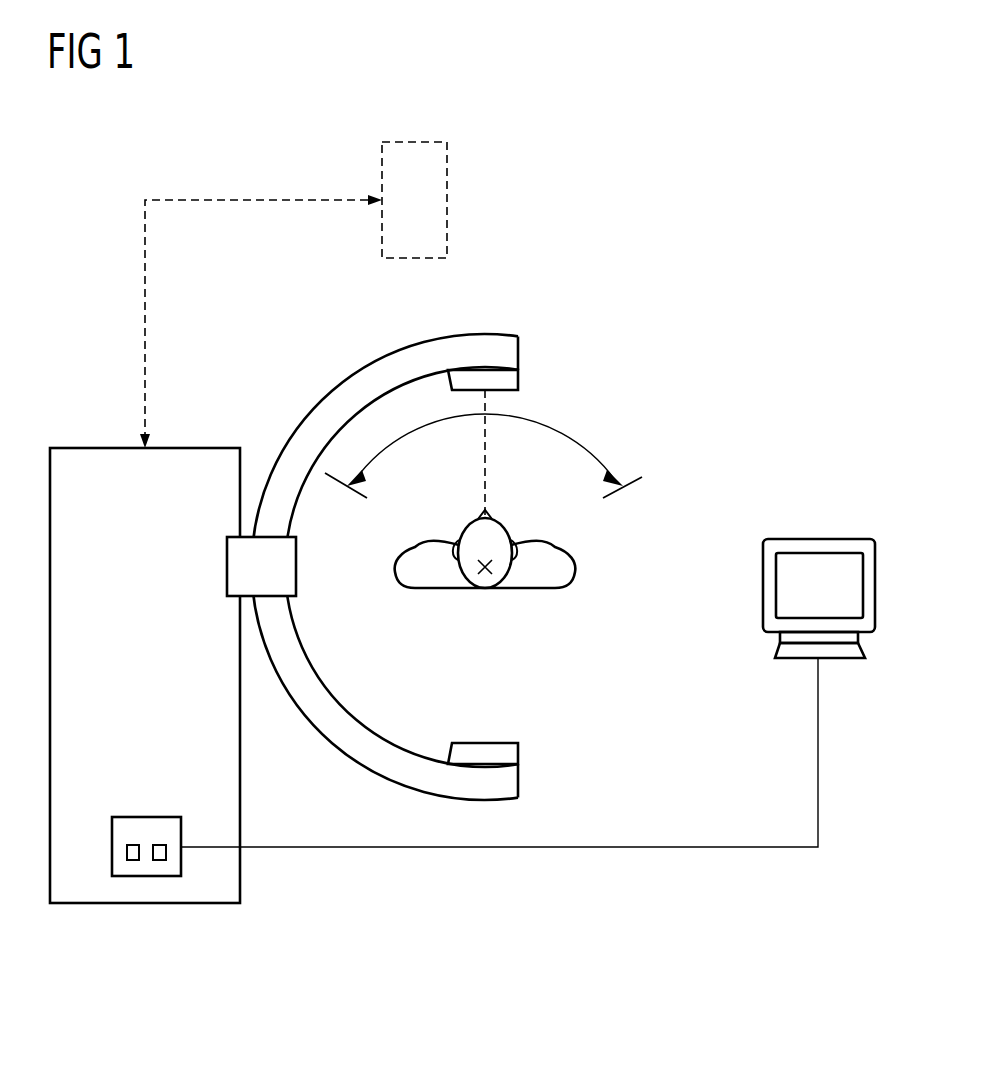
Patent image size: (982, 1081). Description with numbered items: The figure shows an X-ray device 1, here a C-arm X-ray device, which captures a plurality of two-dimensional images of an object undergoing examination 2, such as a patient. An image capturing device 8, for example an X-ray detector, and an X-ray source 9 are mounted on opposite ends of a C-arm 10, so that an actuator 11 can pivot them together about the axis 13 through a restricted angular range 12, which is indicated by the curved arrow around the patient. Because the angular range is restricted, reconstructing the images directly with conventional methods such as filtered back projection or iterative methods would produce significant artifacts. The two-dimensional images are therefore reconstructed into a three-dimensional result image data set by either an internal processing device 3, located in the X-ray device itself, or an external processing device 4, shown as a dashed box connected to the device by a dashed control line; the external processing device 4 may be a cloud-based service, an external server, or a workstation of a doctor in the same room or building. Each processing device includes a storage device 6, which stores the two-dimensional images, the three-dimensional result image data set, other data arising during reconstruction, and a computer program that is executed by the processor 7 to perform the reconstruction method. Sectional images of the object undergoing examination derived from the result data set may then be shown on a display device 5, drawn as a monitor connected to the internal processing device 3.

The X-ray device 1 is at (86, 400).
The object undergoing examination 2 is at (536, 555).
The internal processing device 3 is at (181, 861).
The external processing device 4 is at (447, 187).
The display device 5 is at (818, 539).
The storage device 6 is at (133, 860).
The processor 7 is at (159, 860).
The image capturing device 8 is at (518, 753).
The X-ray source 9 is at (518, 382).
The C-arm 10 is at (518, 352).
The actuator 11 is at (286, 553).
The restricted angular range 12 is at (591, 447).
The axis 13 is at (485, 586).